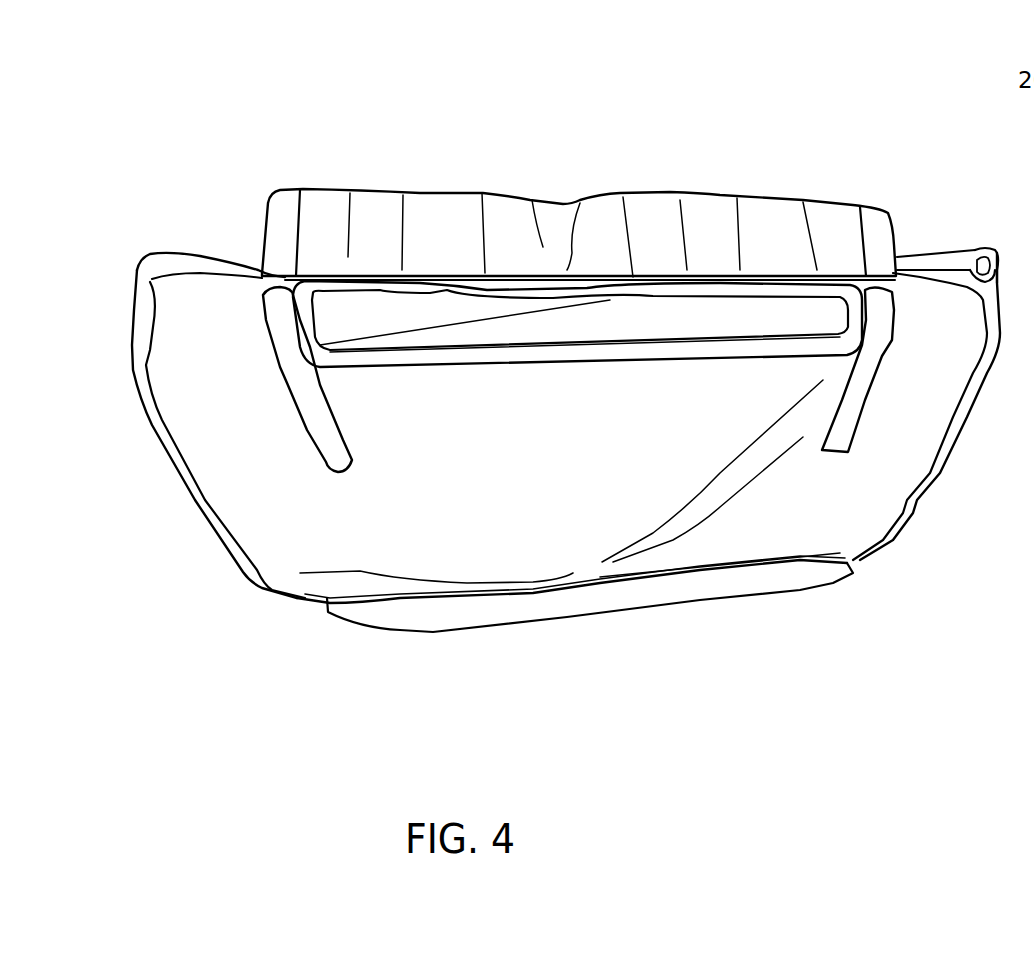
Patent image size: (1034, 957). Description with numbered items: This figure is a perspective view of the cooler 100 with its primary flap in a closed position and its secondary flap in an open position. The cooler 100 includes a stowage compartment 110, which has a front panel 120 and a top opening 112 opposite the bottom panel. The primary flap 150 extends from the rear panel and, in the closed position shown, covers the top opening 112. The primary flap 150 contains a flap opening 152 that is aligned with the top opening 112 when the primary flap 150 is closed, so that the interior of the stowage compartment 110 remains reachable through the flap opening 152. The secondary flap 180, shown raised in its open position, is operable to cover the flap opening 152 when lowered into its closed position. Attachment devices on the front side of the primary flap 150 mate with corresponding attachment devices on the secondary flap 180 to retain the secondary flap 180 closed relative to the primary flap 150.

The cooler 100 is at (266, 98).
The stowage compartment 110 is at (185, 530).
The top opening 112 is at (742, 322).
The front panel 120 is at (705, 587).
The primary flap 150 is at (950, 387).
The flap opening 152 is at (634, 327).
The secondary flap 180 is at (703, 188).